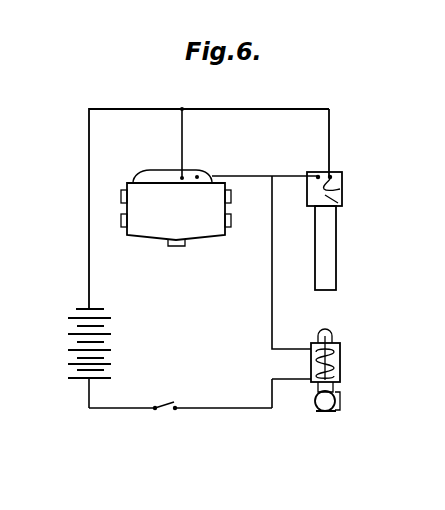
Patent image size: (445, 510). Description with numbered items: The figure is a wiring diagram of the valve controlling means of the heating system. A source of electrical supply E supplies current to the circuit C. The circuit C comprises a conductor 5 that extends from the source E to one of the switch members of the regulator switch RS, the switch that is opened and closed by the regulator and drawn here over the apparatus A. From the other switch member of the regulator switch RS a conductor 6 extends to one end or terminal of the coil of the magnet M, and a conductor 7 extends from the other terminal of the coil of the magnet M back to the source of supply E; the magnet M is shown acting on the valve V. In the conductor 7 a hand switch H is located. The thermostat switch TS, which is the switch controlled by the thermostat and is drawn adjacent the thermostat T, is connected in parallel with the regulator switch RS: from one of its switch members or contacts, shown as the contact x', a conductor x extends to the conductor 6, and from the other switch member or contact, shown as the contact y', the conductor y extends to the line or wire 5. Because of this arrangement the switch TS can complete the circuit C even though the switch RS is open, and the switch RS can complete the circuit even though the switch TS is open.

The conductor 5 is at (192, 198).
The conductor y is at (297, 132).
The conductor x is at (265, 164).
The contact x' is at (309, 163).
The contact y' is at (337, 163).
The thermostat switch TS is at (342, 190).
The thermostat T is at (340, 205).
The regulator switch RS is at (197, 177).
The apparatus A is at (176, 214).
The conductor 6 is at (270, 274).
The source of electrical supply E is at (101, 358).
The circuit C is at (179, 358).
The conductor 7 is at (229, 410).
The hand switch H is at (161, 411).
The magnet M is at (336, 362).
The valve V is at (340, 403).